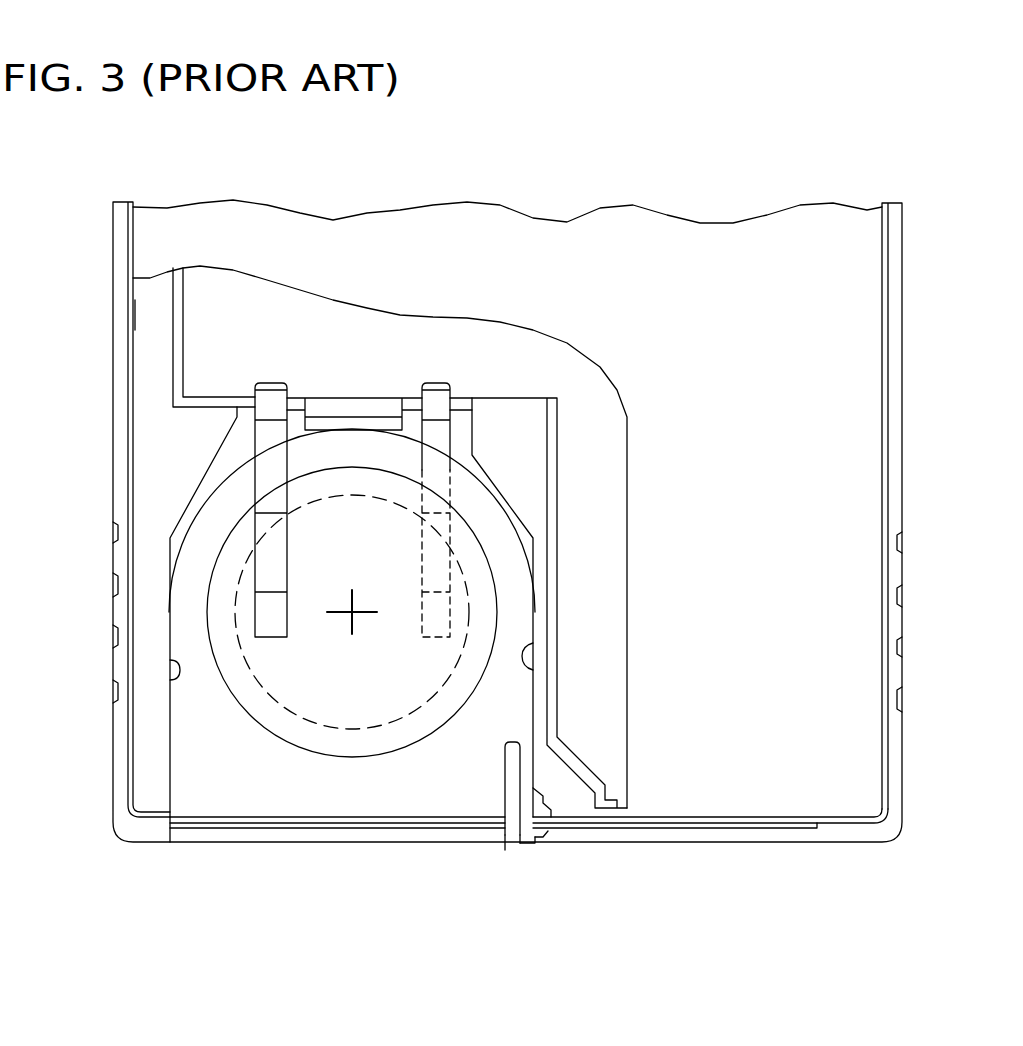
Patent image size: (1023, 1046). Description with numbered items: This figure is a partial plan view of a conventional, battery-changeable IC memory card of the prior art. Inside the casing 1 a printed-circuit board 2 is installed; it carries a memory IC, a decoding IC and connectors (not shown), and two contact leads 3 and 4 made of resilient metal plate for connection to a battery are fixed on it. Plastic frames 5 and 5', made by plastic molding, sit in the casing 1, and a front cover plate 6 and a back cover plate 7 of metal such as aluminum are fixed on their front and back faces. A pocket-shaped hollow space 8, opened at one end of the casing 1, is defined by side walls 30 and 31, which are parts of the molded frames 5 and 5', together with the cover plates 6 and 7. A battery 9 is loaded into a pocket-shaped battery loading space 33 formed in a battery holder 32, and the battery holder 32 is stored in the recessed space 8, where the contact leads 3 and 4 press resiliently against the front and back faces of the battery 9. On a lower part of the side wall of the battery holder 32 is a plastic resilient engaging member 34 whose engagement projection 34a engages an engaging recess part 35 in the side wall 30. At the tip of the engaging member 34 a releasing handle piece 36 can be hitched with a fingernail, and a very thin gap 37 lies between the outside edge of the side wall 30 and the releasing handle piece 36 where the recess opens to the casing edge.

The casing 1 is at (917, 659).
The printed-circuit board 2 is at (370, 337).
The contact lead 3 is at (256, 393).
The contact lead 4 is at (432, 395).
The plastic frame 5 is at (702, 597).
The plastic frame 5' is at (102, 299).
The front cover plate 6 is at (268, 250).
The back cover plate 7 is at (515, 837).
The hollow space 8 is at (222, 470).
The battery 9 is at (335, 710).
The side wall 30 is at (527, 653).
The side wall 31 is at (178, 665).
The battery holder 32 is at (228, 795).
The battery loading space 33 is at (228, 532).
The resilient engaging member 34 is at (527, 775).
The engagement projection 34a is at (573, 818).
The engaging recess part 35 is at (540, 790).
The releasing handle piece 36 is at (532, 845).
The gap 37 is at (552, 835).